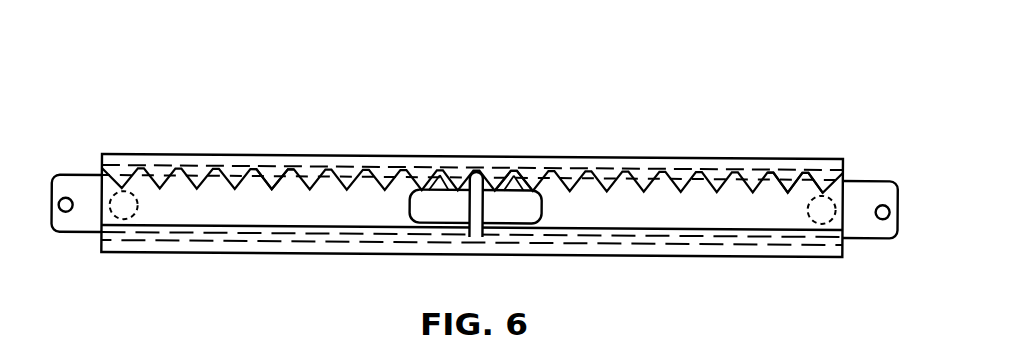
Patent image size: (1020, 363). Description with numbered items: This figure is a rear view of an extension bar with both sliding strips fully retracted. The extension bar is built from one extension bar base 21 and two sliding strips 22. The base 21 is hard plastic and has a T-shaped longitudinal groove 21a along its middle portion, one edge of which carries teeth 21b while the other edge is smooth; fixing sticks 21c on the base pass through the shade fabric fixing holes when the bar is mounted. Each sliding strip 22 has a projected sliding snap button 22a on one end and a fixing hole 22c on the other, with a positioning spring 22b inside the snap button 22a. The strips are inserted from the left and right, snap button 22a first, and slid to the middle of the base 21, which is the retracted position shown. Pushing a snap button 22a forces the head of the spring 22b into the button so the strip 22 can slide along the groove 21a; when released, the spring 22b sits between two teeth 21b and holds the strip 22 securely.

The extension bar base 21 is at (187, 165).
The T-shaped longitudinal groove 21a is at (478, 203).
The teeth 21b is at (273, 172).
The fixing sticks 21c is at (816, 207).
The sliding strip 22 is at (83, 190).
The sliding snap button 22a is at (522, 203).
The positioning spring 22b is at (510, 175).
The fixing hole 22c is at (882, 205).